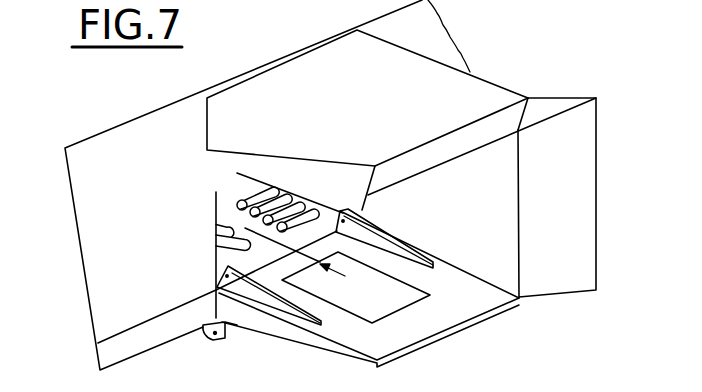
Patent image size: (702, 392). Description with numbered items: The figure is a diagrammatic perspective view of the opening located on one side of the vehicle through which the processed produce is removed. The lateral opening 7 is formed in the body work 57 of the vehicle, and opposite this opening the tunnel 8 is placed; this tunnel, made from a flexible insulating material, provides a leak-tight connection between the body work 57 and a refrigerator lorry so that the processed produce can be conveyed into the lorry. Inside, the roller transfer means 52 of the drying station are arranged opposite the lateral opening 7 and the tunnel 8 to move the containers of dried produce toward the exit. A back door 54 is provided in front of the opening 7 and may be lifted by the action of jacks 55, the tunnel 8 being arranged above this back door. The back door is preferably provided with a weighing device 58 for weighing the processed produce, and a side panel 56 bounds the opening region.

The lateral opening 7 is at (238, 186).
The tunnel 8 is at (506, 85).
The transfer rollers 52 is at (216, 243).
The back door 54 is at (328, 329).
The jacks 55 is at (235, 330).
The right side panel 56 is at (500, 245).
The body work 57 is at (90, 234).
The weighing device 58 is at (387, 300).